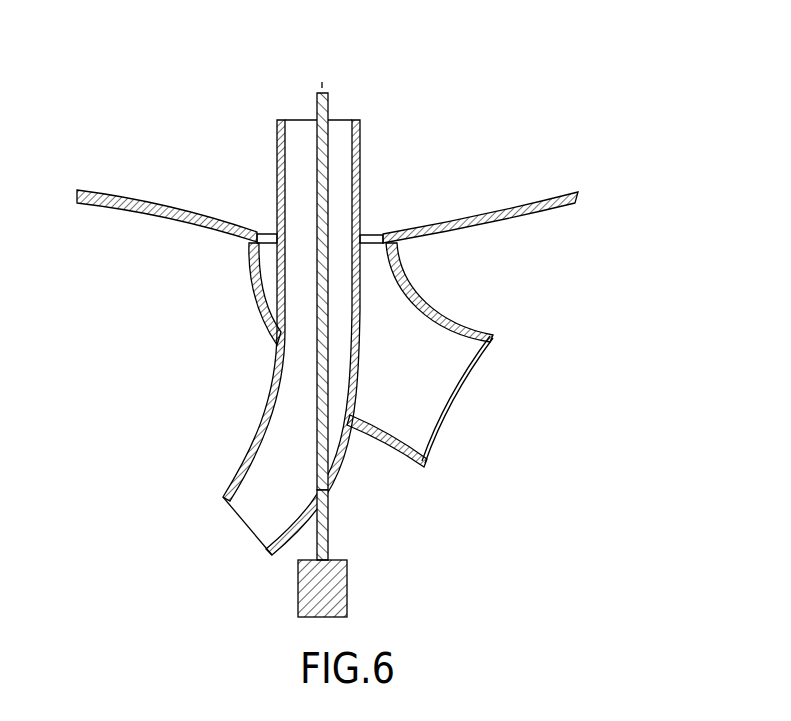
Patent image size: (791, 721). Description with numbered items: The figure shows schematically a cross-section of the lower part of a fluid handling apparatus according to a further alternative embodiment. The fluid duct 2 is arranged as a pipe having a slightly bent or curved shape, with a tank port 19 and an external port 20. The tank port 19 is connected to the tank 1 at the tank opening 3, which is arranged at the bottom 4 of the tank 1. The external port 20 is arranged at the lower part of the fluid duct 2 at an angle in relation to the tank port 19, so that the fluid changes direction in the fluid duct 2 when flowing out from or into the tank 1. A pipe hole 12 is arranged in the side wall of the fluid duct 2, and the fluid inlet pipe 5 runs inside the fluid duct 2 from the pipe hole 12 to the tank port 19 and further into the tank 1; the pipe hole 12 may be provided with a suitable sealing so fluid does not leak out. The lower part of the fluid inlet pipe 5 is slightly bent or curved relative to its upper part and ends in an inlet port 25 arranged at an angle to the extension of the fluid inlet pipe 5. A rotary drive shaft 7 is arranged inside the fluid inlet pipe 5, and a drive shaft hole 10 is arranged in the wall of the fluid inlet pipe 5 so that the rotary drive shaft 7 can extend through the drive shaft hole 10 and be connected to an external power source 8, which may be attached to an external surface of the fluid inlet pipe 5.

The tank 1 is at (545, 212).
The fluid duct 2 is at (430, 393).
The tank opening 3 is at (272, 232).
The bottom 4 is at (177, 208).
The fluid inlet pipe 5 is at (342, 176).
The rotary drive shaft 7 is at (328, 103).
The external power source 8 is at (333, 577).
The drive shaft hole 10 is at (328, 490).
The pipe hole 12 is at (275, 348).
The tank port 19 is at (397, 248).
The external port 20 is at (472, 363).
The inlet port 25 is at (243, 507).